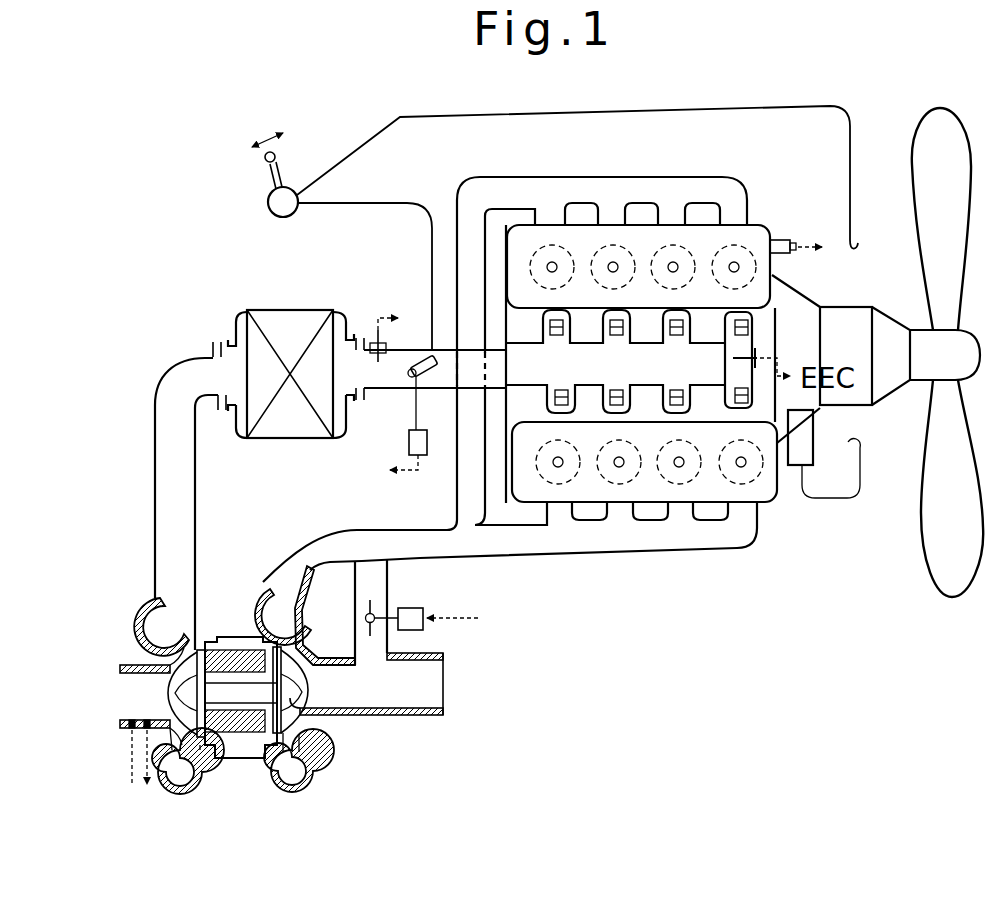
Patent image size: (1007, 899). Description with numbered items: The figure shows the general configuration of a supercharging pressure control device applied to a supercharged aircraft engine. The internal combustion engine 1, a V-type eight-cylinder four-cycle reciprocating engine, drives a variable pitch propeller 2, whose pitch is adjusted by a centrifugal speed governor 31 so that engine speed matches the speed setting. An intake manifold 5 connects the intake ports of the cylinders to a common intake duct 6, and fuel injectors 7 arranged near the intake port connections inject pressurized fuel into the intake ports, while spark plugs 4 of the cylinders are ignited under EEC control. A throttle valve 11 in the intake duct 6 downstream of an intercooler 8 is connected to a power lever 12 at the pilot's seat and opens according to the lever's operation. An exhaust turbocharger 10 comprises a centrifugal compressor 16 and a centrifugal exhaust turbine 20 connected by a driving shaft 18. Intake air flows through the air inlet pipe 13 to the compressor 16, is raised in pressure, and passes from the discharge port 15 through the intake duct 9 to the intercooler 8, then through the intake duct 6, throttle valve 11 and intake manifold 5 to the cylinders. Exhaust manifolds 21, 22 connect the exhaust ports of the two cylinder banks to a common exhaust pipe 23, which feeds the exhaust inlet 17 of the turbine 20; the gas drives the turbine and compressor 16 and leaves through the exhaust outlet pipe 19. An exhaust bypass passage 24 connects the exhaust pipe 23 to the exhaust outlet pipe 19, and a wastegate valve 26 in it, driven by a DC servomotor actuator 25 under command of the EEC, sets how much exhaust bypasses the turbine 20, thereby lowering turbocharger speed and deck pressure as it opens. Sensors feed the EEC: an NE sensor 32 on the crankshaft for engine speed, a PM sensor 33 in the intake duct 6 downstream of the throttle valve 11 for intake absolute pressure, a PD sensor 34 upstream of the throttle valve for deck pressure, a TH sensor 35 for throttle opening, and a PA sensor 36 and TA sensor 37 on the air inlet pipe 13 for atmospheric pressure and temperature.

The internal combustion engine 1 is at (771, 221).
The propeller 2 is at (915, 140).
The spark plugs 4 is at (679, 468).
The intake manifold 5 is at (762, 320).
The intake duct 6 is at (742, 348).
The fuel injectors 7 is at (557, 387).
The intercooler 8 is at (268, 432).
The intake duct 9 is at (155, 455).
The exhaust turbocharger 10 is at (207, 682).
The throttle valve 11 is at (410, 370).
The power lever 12 is at (290, 180).
The air inlet pipe 13 is at (128, 665).
The discharge port 15 is at (168, 618).
The compressor 16 is at (170, 690).
The exhaust inlet 17 is at (280, 600).
The driving shaft 18 is at (250, 695).
The exhaust outlet pipe 19 is at (430, 700).
The exhaust turbine 20 is at (330, 713).
The exhaust manifold 21 is at (467, 205).
The exhaust manifold 22 is at (740, 540).
The common exhaust pipe 23 is at (328, 540).
The exhaust bypass passage 24 is at (367, 657).
The actuator 25 is at (425, 610).
The wastegate valve 26 is at (365, 614).
The speed governor 31 is at (793, 468).
The NE sensor 32 is at (786, 245).
The PM sensor 33 is at (822, 345).
The PD sensor 34 is at (372, 330).
The TH sensor 35 is at (428, 445).
The PA sensor 36 is at (178, 775).
The TA sensor 37 is at (128, 730).